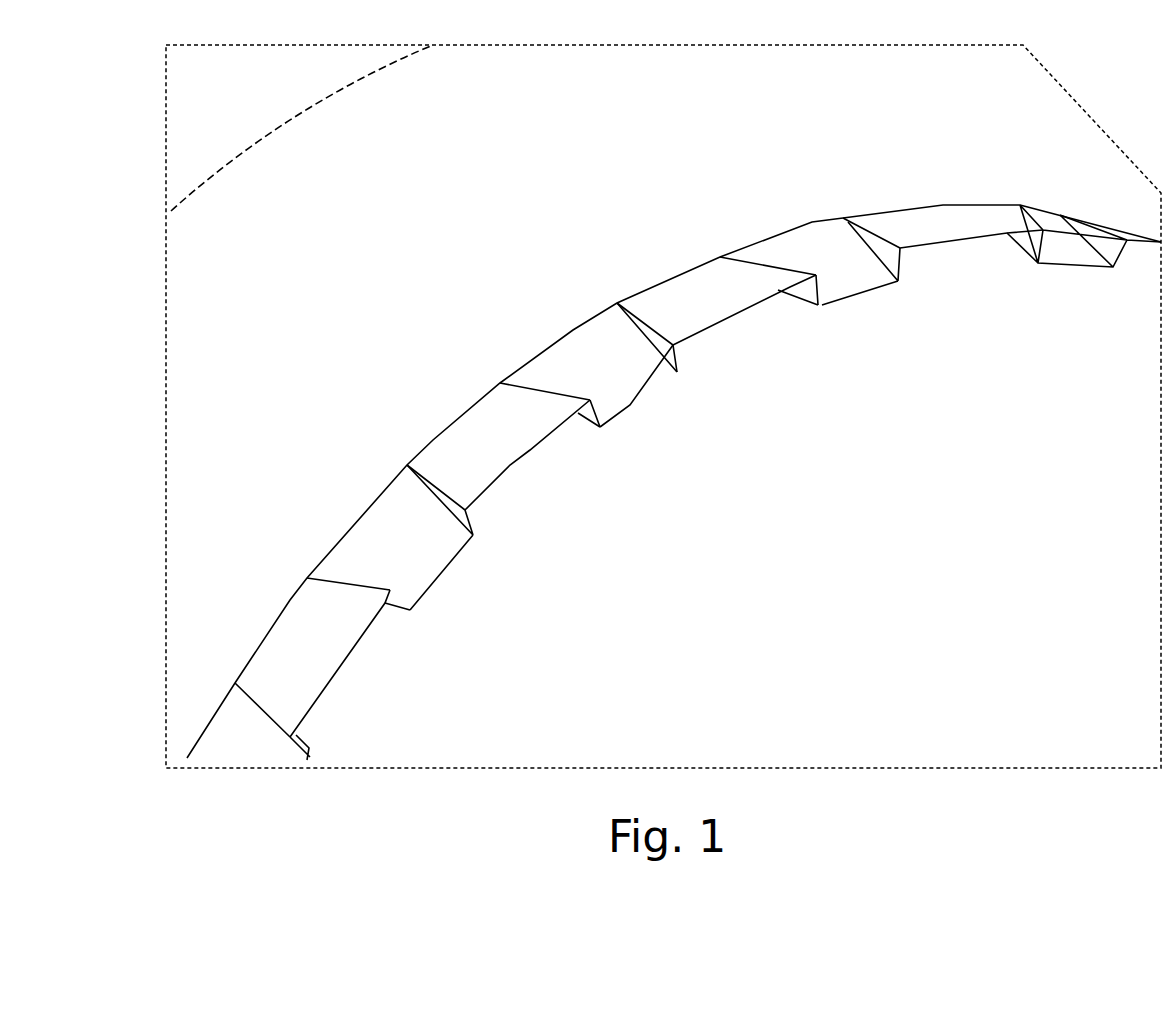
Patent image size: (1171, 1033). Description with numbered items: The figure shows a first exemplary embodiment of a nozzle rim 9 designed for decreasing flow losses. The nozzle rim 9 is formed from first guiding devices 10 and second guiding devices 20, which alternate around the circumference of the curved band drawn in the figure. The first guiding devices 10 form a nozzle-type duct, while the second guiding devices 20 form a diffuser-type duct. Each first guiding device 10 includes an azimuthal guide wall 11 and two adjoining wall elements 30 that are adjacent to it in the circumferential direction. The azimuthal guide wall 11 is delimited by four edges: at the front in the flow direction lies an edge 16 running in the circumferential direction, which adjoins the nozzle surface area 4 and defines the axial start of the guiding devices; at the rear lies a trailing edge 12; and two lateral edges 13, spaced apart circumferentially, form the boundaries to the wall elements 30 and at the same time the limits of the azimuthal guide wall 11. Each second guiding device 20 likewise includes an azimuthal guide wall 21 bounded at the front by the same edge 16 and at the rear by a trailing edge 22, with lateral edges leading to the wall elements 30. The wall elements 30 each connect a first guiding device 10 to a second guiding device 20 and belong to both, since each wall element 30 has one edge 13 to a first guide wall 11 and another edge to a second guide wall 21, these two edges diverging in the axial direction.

The nozzle surface area 4 is at (657, 143).
The nozzle rim 9 is at (895, 198).
The first guiding device 10 is at (564, 311).
The azimuthal guide wall 11 is at (809, 242).
The trailing edge 12 is at (643, 397).
The lateral edge 13 is at (645, 338).
The edge 16 is at (600, 308).
The second guiding device 20 is at (743, 345).
The azimuthal guide wall 21 is at (682, 290).
The trailing edge 22 is at (776, 293).
The wall element 30 is at (677, 362).